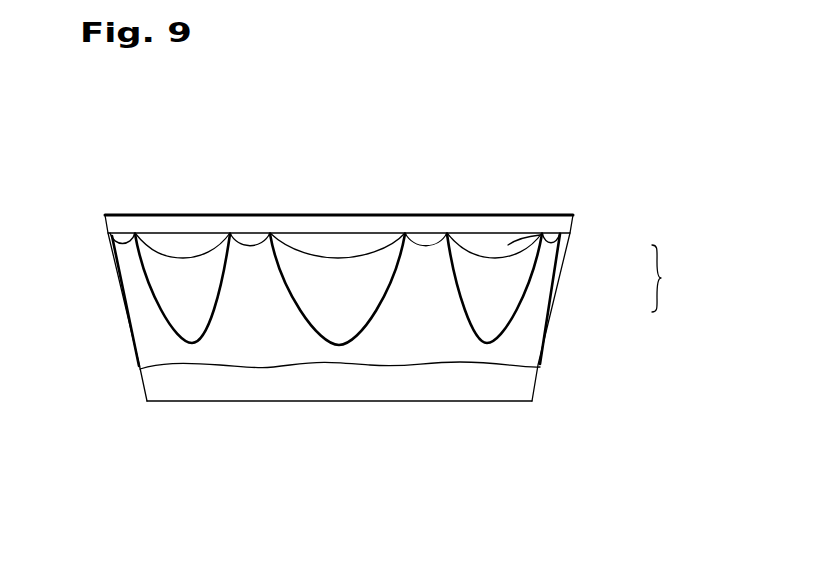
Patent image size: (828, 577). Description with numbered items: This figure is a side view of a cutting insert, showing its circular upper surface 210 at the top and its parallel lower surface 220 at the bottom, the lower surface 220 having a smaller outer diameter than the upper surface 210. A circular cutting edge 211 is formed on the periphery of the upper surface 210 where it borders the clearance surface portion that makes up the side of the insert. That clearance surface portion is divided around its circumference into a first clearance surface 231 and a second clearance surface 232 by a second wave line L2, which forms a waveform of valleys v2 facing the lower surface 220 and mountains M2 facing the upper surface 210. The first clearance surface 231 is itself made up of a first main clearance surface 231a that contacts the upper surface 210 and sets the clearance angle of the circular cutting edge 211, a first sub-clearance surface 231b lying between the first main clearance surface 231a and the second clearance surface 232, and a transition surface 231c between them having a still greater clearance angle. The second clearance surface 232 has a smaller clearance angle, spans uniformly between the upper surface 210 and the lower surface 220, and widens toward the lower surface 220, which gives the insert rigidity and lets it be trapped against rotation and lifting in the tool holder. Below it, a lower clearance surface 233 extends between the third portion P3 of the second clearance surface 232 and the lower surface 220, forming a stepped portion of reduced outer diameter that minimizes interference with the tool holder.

The upper surface 210 is at (548, 214).
The circular cutting edge 211 is at (104, 213).
The mountain M2 is at (270, 232).
The lower surface 220 is at (507, 402).
The first clearance surface 231 is at (674, 278).
The first main clearance surface 231a is at (568, 227).
The first sub-clearance surface 231b is at (539, 254).
The transition surface 231c is at (500, 275).
The second clearance surface 232 is at (433, 332).
The lower clearance surface 233 is at (417, 392).
The second wave line L2 is at (303, 317).
The valley v2 is at (335, 350).
The third portion P3 is at (357, 352).